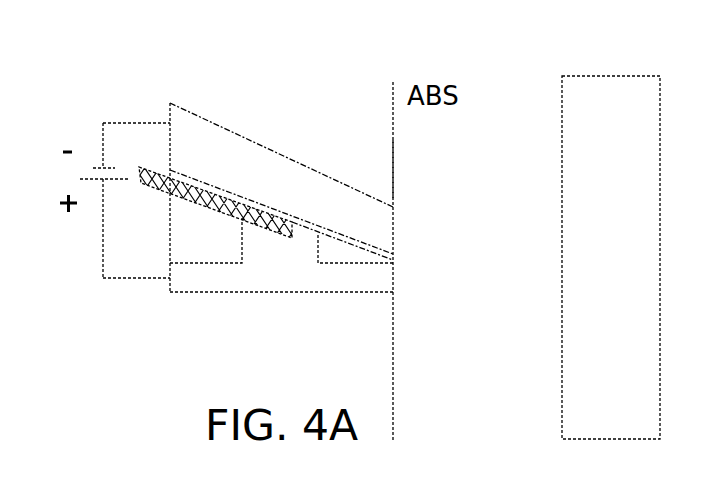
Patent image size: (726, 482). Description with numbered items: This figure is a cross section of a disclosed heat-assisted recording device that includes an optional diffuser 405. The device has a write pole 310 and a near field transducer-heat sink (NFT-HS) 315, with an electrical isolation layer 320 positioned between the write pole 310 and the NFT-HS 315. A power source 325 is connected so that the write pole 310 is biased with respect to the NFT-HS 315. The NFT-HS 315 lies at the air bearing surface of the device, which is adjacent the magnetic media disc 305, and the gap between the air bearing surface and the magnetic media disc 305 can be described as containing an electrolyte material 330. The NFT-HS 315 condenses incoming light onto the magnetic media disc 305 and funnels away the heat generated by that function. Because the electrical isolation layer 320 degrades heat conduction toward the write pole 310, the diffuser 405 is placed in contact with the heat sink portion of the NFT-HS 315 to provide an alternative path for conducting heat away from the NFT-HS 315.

The magnetic media disc 305 is at (630, 250).
The write pole 310 is at (343, 197).
The near field transducer-heat sink (NFT-HS) 315 is at (310, 280).
The electrical isolation layer 320 is at (362, 243).
The power source 325 is at (88, 200).
The electrolyte material 330 is at (515, 170).
The diffuser 405 is at (153, 170).